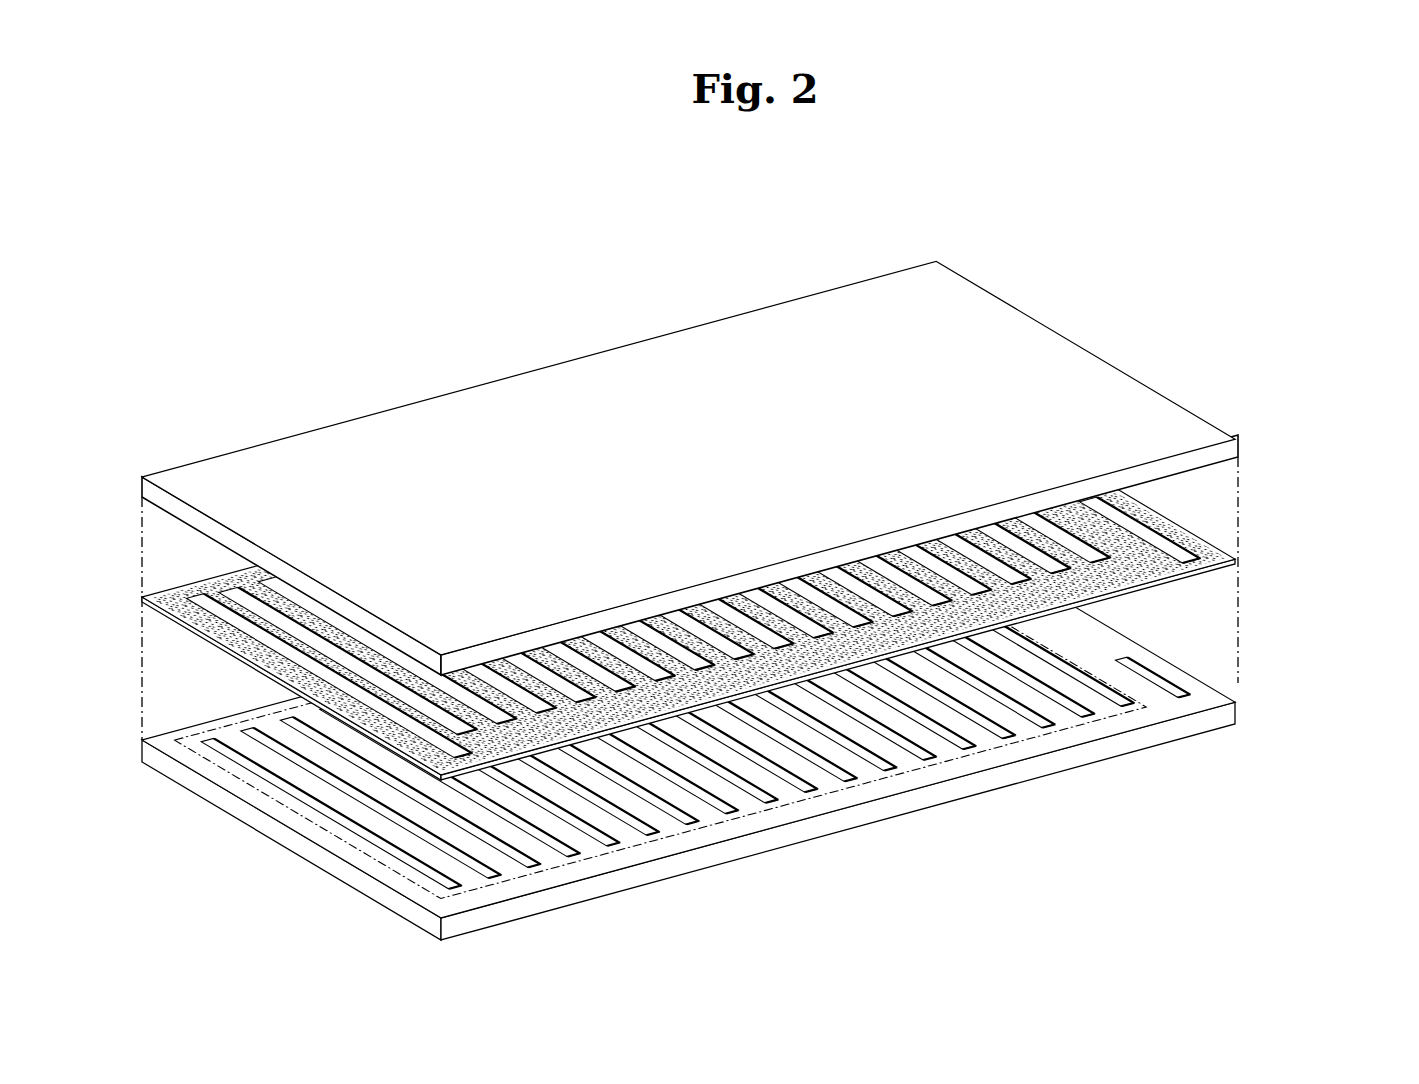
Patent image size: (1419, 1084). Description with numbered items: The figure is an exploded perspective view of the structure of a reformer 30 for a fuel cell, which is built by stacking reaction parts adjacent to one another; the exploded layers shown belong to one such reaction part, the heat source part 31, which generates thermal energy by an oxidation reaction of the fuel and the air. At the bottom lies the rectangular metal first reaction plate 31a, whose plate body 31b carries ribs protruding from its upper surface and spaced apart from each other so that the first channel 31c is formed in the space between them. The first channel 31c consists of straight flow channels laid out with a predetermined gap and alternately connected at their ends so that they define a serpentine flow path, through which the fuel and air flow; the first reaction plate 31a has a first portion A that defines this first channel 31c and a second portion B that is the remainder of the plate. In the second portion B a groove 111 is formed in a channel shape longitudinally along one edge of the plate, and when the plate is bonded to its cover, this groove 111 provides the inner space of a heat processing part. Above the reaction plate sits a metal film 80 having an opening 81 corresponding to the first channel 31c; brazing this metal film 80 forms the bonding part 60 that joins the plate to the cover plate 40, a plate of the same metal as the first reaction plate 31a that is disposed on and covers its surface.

The reformer 30 is at (776, 198).
The heat source part 31 is at (1208, 349).
The first reaction plate 31a is at (945, 801).
The plate body 31b is at (848, 790).
The first channel 31c is at (592, 856).
The cover plate 40 is at (1036, 320).
The bonding part 60 is at (1246, 530).
The metal film 80 is at (1178, 512).
The opening 81 is at (257, 632).
The groove 111 is at (1124, 656).
The first portion A is at (1147, 707).
The second portion B is at (1178, 664).